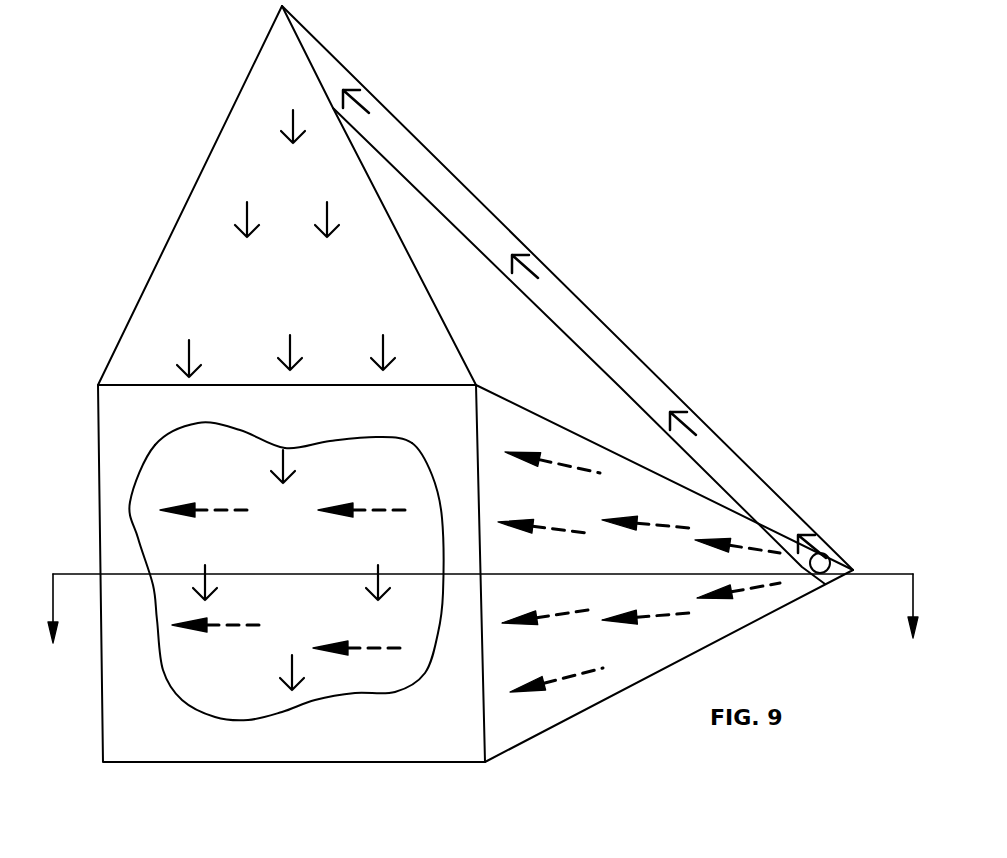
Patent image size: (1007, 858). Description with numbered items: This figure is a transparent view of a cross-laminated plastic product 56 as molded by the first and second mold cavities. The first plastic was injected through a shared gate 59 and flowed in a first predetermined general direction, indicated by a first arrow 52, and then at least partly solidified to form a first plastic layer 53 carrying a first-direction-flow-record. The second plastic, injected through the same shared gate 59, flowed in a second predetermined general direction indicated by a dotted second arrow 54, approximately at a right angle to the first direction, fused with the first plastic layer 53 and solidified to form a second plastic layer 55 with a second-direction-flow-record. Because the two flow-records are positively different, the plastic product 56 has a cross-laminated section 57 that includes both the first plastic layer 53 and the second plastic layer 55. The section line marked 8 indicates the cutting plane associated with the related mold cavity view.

The section line 8- 8 is at (483, 625).
The first arrow 52 is at (287, 672).
The first plastic layer 53 is at (395, 460).
The second arrow 54 is at (237, 622).
The second plastic layer 55 is at (313, 455).
The plastic product 56 is at (200, 142).
The cross-laminated section 57 is at (212, 435).
The shared gate 59 is at (828, 557).